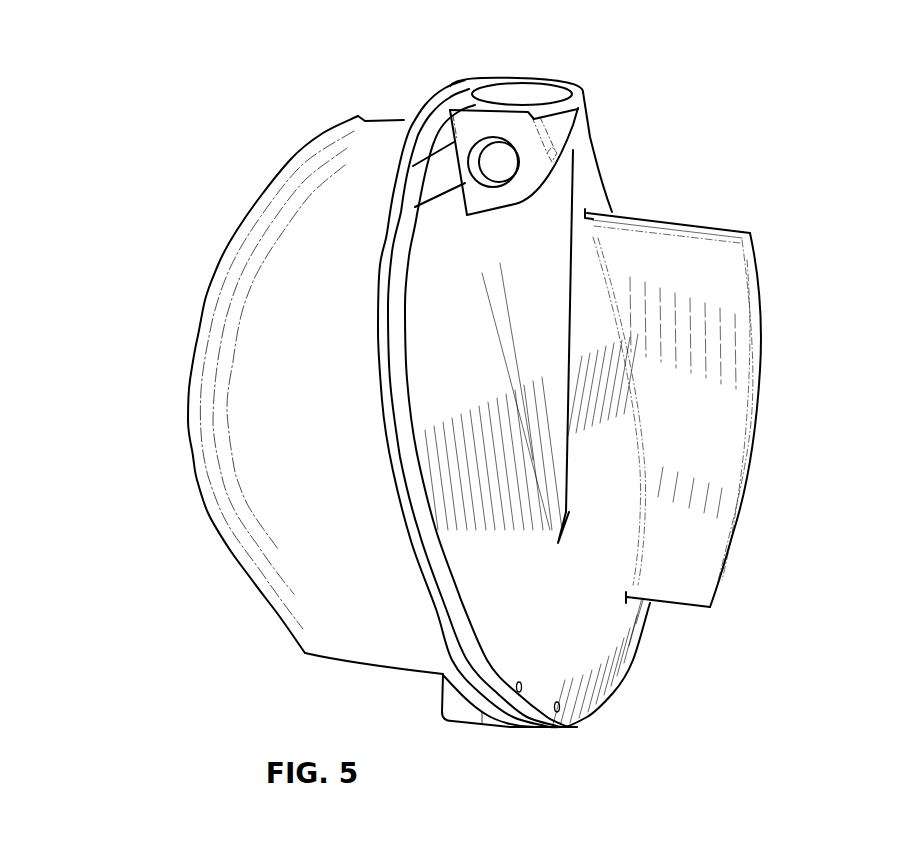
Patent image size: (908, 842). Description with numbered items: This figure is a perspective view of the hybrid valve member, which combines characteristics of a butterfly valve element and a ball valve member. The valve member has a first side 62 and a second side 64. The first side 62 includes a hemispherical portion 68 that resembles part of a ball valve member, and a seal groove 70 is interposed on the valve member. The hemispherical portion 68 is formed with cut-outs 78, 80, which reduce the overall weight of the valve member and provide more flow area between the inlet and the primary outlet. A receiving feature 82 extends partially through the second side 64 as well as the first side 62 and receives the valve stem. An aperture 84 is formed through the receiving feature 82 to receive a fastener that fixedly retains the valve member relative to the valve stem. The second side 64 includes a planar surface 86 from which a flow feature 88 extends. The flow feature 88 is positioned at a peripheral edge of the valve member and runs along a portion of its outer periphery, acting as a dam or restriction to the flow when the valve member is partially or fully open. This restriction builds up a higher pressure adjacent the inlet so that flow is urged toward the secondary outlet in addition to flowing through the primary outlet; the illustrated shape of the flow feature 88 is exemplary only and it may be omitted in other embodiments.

The first side 62 is at (208, 160).
The second side 64 is at (820, 311).
The hemispherical portion 68 is at (233, 393).
The seal groove 70 is at (450, 83).
The cut-out 78 is at (380, 118).
The cut-out 80 is at (393, 676).
The receiving feature 82 is at (543, 227).
The aperture 84 is at (498, 137).
The planar surface 86 is at (593, 683).
The flow feature 88 is at (760, 367).